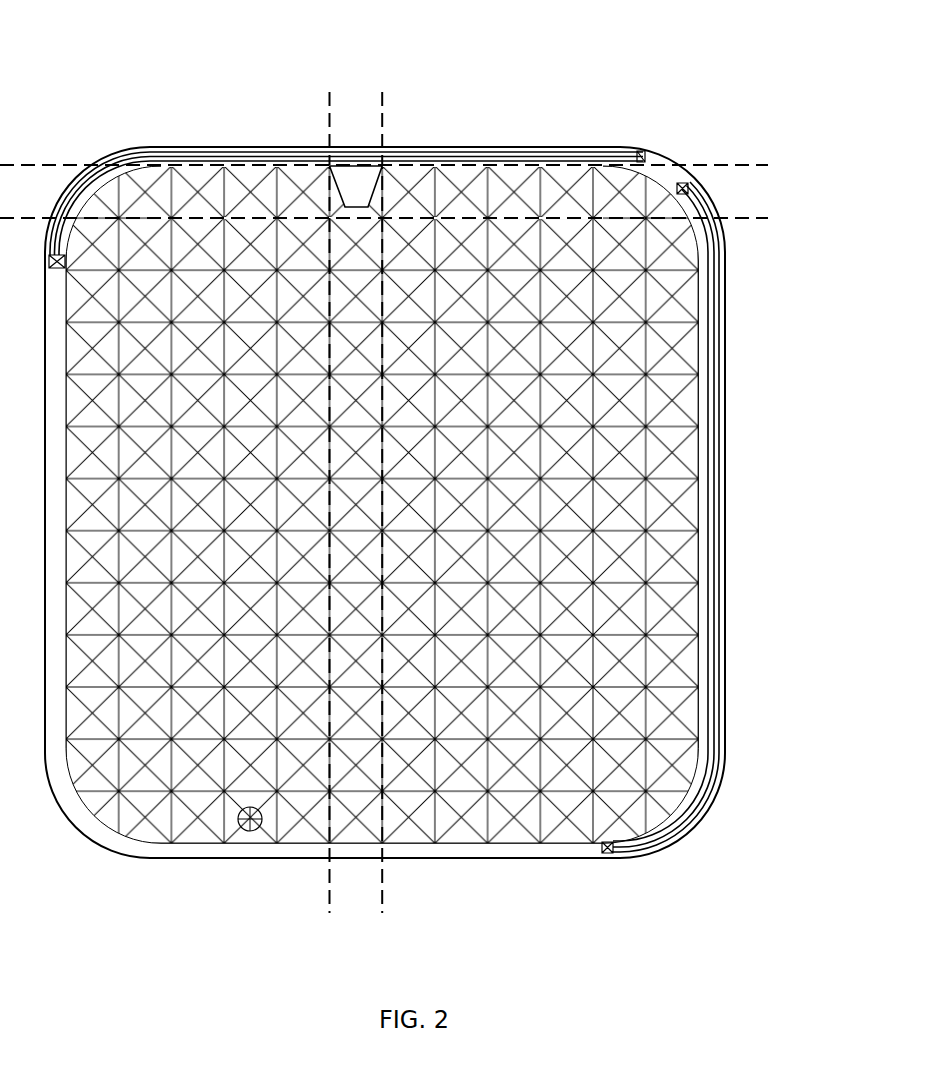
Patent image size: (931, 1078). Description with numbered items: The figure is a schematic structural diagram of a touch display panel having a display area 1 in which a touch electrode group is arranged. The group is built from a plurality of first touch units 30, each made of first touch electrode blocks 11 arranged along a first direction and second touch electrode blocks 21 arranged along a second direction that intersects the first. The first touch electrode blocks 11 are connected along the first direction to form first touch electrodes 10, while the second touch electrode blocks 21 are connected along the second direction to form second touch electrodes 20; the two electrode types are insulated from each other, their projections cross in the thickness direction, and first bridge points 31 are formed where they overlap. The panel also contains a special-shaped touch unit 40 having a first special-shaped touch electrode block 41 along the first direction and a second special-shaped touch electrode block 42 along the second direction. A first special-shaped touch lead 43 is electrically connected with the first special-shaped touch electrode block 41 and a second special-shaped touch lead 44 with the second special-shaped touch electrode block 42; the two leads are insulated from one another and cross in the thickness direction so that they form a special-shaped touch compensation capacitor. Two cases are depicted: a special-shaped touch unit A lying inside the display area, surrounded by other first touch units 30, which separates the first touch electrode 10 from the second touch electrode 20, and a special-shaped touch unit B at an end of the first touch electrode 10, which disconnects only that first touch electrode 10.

The display area 1 is at (703, 403).
The first touch electrode 10 is at (32, 193).
The first touch electrode block 11 is at (370, 812).
The second touch electrode 20 is at (373, 142).
The second touch electrode block 21 is at (337, 837).
The first touch unit 30 is at (382, 532).
The first bridge point 31 is at (360, 823).
The special-shaped touch unit 40 is at (450, 515).
The first special-shaped touch electrode block 41 is at (647, 193).
The second special-shaped touch electrode block 42 is at (690, 197).
The first special-shaped touch lead 43 is at (372, 193).
The second special-shaped touch lead 44 is at (353, 167).
The special-shaped touch unit A is at (234, 827).
The special-shaped touch unit B is at (332, 207).